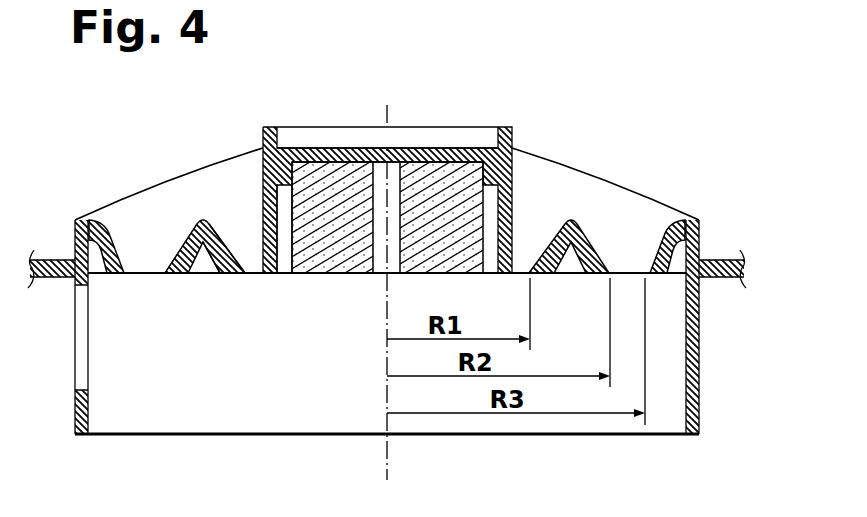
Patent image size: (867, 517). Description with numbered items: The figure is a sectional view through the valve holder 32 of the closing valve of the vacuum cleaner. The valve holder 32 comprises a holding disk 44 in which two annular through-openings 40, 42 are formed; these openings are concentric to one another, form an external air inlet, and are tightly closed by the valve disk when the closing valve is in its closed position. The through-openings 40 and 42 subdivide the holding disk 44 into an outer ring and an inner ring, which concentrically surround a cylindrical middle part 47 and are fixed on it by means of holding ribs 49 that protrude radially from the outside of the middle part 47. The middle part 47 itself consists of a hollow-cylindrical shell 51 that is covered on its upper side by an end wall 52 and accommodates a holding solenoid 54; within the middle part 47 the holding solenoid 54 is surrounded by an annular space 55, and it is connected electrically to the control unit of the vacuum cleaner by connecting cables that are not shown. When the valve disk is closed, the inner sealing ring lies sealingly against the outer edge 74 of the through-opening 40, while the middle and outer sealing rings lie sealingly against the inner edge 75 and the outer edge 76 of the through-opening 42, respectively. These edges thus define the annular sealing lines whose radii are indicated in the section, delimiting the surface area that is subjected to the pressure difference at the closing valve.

The valve holder 32 is at (406, 240).
The through-opening 40 is at (255, 255).
The through-opening 42 is at (155, 262).
The holding disk 44 is at (699, 240).
The middle part 47 is at (392, 160).
The holding ribs 49 is at (188, 185).
The hollow-cylindrical shell 51 is at (263, 185).
The end wall 52 is at (322, 160).
The holding solenoid 54 is at (432, 185).
The annular space 55 is at (285, 257).
The outer edge 74 is at (247, 273).
The inner edge 75 is at (165, 273).
The outer edge 76 is at (118, 273).